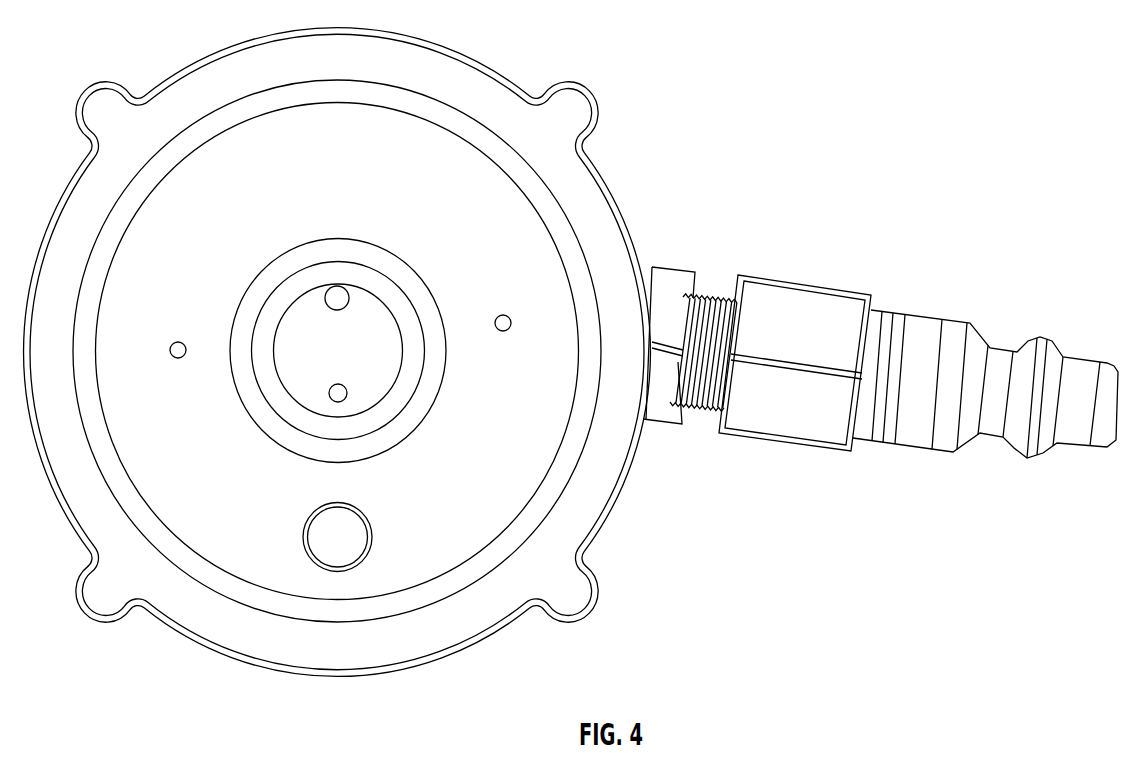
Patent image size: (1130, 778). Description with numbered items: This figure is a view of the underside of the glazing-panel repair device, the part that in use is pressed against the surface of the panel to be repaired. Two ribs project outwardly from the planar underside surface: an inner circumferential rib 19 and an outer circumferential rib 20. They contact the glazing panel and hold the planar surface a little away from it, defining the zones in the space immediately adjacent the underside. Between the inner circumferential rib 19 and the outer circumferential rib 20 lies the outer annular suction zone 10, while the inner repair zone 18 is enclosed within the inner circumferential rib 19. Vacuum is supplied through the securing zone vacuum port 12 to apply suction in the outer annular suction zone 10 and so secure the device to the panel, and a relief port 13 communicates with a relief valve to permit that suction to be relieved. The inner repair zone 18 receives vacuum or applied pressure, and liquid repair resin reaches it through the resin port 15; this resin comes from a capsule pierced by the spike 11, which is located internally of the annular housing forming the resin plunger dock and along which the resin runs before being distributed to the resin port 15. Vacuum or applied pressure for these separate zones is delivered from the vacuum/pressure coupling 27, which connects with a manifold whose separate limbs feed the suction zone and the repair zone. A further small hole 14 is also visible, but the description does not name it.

The outer annular suction zone 10 is at (324, 178).
The spike 11 is at (351, 550).
The securing zone vacuum port 12 is at (508, 317).
The relief port 13 is at (173, 344).
The opening 14 is at (342, 288).
The resin port 15 is at (347, 394).
The inner repair zone 18 is at (325, 363).
The inner circumferential rib 19 is at (413, 288).
The outer circumferential rib 20 is at (562, 227).
The vacuum/pressure coupling 27 is at (808, 302).